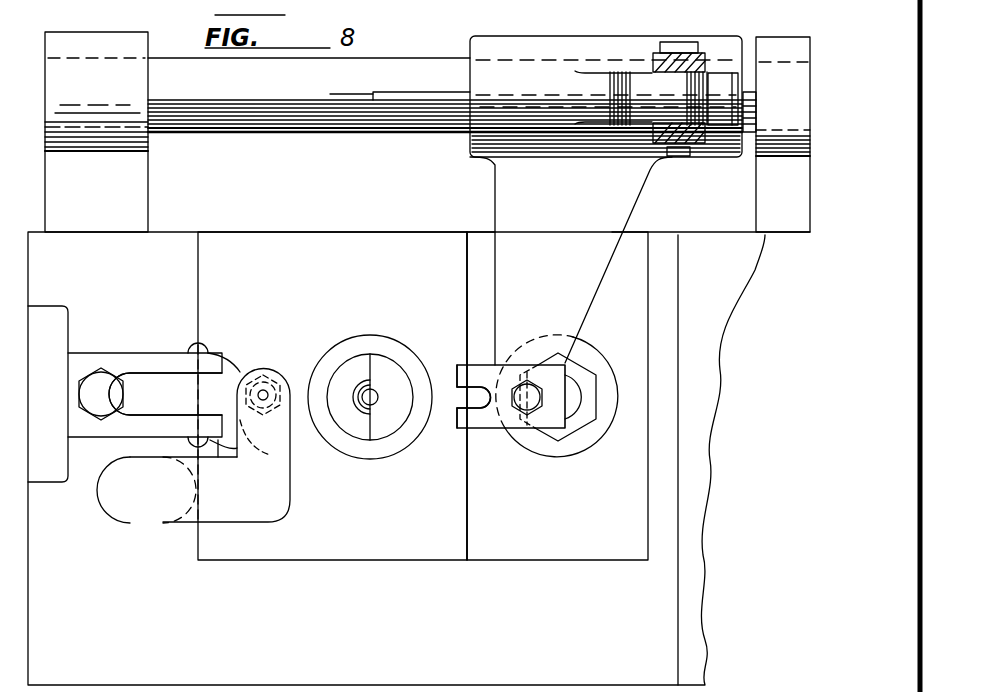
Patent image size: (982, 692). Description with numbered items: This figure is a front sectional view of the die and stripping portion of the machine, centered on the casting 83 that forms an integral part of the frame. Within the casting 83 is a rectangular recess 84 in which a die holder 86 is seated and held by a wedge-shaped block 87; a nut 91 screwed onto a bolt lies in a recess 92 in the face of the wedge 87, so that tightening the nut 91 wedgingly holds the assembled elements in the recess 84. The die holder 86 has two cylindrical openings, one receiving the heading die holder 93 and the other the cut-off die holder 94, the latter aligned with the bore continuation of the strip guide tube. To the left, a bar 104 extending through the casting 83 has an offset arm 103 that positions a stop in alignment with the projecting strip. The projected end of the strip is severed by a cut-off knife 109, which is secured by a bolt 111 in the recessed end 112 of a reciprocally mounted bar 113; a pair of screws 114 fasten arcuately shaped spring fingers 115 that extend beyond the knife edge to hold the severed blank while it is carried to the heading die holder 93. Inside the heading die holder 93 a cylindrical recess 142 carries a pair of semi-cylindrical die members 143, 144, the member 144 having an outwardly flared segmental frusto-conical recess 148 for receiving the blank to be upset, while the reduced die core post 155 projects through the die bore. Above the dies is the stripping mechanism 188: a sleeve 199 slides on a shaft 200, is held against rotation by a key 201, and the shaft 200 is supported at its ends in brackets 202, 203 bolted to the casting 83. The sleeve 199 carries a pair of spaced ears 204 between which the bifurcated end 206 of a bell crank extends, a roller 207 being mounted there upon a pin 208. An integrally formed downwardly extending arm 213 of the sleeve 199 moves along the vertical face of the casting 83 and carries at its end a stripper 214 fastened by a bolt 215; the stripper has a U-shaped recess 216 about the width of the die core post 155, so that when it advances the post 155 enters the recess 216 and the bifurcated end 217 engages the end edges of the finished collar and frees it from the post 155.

The casting 83 is at (419, 458).
The recess 84 is at (442, 562).
The die holder 86 is at (375, 545).
The wedge-shaped block 87 is at (566, 545).
The nut 91 is at (590, 398).
The recess 92 is at (600, 440).
The heading die holder 93 is at (395, 447).
The cut-off die holder 94 is at (272, 380).
The offset arm 103 is at (190, 500).
The bar 104 is at (127, 505).
The cut-off knife 109 is at (146, 383).
The bolt 111 is at (104, 381).
The recessed end 112 is at (165, 366).
The reciprocally mounted bar 113 is at (50, 342).
The screws 114 is at (228, 338).
The spring fingers 115 is at (248, 368).
The cylindrical recess 142 is at (360, 433).
The semi-cylindrical member 143 is at (397, 408).
The semi-cylindrical member 144 is at (343, 408).
The segmental frusto-conical recess 148 is at (372, 385).
The die core post 155 is at (372, 397).
The stripping mechanism 188 is at (623, 293).
The sleeve 199 is at (572, 28).
The shaft 200 is at (362, 120).
The key 201 is at (440, 100).
The bracket 202 is at (130, 53).
The bracket 203 is at (777, 46).
The spaced ears 204 is at (642, 80).
The bifurcated end 206 is at (700, 132).
The roller 207 is at (700, 82).
The pin 208 is at (684, 157).
The arm 213 is at (518, 261).
The stripper 214 is at (480, 414).
The bolt 215 is at (536, 416).
The U-shaped recess 216 is at (450, 385).
The bifurcated end 217 is at (480, 417).